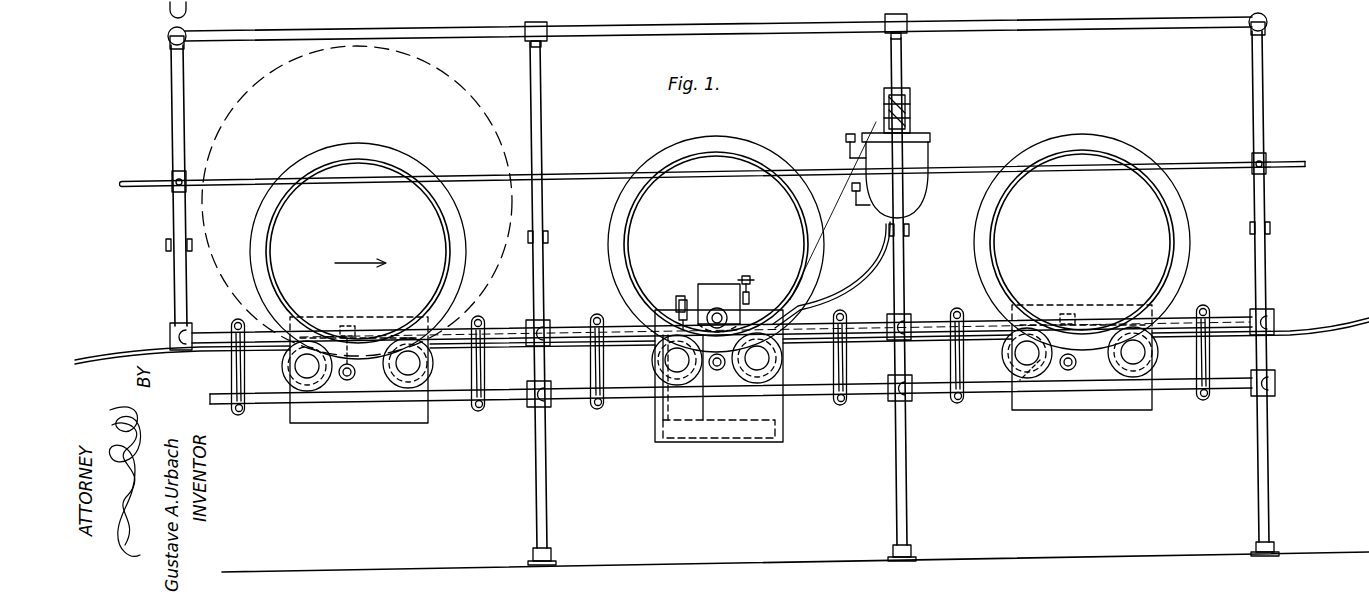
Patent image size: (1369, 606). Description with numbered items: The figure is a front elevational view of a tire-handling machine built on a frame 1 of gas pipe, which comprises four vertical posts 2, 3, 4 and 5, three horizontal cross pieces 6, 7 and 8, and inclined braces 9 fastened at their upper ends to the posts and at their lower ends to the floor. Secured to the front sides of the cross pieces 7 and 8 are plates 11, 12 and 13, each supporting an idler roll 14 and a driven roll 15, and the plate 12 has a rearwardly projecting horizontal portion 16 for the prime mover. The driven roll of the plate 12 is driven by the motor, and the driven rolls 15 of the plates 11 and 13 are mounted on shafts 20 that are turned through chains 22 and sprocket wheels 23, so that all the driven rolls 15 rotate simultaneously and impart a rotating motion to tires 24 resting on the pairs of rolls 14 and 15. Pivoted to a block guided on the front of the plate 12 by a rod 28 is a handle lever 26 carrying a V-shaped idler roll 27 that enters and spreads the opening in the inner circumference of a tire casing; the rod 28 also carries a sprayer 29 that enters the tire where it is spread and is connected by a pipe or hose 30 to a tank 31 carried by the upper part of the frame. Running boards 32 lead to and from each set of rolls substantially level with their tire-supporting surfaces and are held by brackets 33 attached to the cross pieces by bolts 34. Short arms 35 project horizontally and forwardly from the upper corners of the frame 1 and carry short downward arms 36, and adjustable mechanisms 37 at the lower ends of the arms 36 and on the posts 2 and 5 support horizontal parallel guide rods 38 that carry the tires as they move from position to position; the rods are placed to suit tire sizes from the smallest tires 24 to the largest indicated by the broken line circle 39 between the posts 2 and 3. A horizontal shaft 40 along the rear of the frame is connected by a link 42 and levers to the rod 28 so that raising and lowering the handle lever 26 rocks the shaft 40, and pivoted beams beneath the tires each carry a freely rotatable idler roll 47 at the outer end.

The frame 1 is at (243, 32).
The vertical post 2 is at (170, 213).
The vertical post 3 is at (531, 102).
The vertical post 4 is at (890, 61).
The vertical post 5 is at (1268, 203).
The horizontal cross piece 6 is at (574, 33).
The horizontal cross piece 7 is at (206, 332).
The horizontal cross piece 8 is at (224, 406).
The inclined brace 9 is at (166, 248).
The plate 11 is at (350, 416).
The plate 12 is at (712, 436).
The plate 13 is at (1075, 408).
The idler roll 14 is at (322, 385).
The driven roll 15 is at (395, 386).
The rearwardly-projecting horizontal portion 16 is at (755, 428).
The shaft 20 is at (689, 4).
The chain 22 is at (507, 378).
The sprocket wheel 23 is at (367, 371).
The tire 24 is at (466, 240).
The handle lever 26 is at (718, 306).
The V-shaped idler roll 27 is at (708, 284).
The rod 28 is at (680, 294).
The sprayer 29 is at (750, 290).
The pipe or hose 30 is at (853, 285).
The tank 31 is at (925, 197).
The plate or running board 32 is at (165, 347).
The bracket 33 is at (246, 388).
The bolt 34 is at (244, 414).
The arm 35 is at (157, 9).
The arm 36 is at (170, 107).
The adjustable mechanism 37 is at (171, 177).
The guide rod 38 is at (1196, 160).
The broken line circle 39 is at (455, 85).
The horizontal shaft 40 is at (380, 323).
The link 42 is at (680, 298).
The idler roll 47 is at (1068, 371).